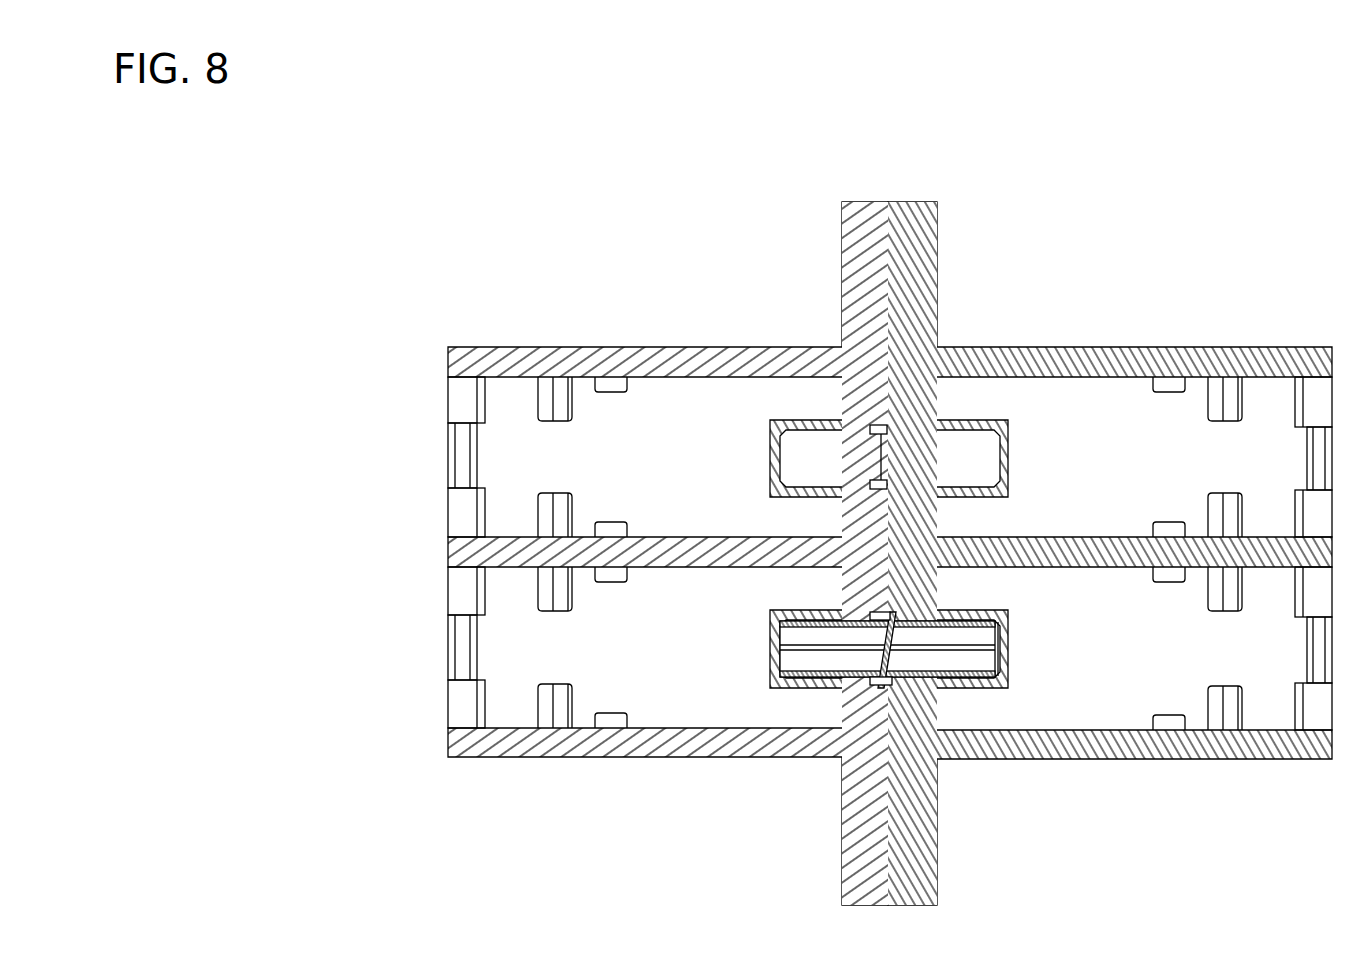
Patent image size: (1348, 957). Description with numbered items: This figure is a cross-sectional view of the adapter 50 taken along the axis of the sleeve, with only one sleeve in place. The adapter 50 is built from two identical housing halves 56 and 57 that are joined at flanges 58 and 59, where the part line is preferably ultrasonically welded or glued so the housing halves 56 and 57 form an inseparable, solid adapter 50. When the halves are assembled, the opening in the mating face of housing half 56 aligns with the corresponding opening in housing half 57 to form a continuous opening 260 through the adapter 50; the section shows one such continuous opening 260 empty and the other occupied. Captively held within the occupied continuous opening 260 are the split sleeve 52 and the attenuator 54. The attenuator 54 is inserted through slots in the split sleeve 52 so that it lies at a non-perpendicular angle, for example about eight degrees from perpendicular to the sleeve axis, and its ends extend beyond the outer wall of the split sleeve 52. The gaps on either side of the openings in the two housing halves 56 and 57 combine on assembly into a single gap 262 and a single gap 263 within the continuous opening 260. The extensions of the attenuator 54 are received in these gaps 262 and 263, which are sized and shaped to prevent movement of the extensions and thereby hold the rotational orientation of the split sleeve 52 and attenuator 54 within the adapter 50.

The adapter 50 is at (750, 263).
The split sleeve 52 is at (795, 660).
The attenuator 54 is at (888, 638).
The housing half 56 is at (1281, 750).
The housing half 57 is at (640, 738).
The flange 58 is at (937, 858).
The flange 59 is at (840, 849).
The continuous opening 260 is at (1036, 461).
The gap 262 is at (898, 484).
The gap 263 is at (898, 431).